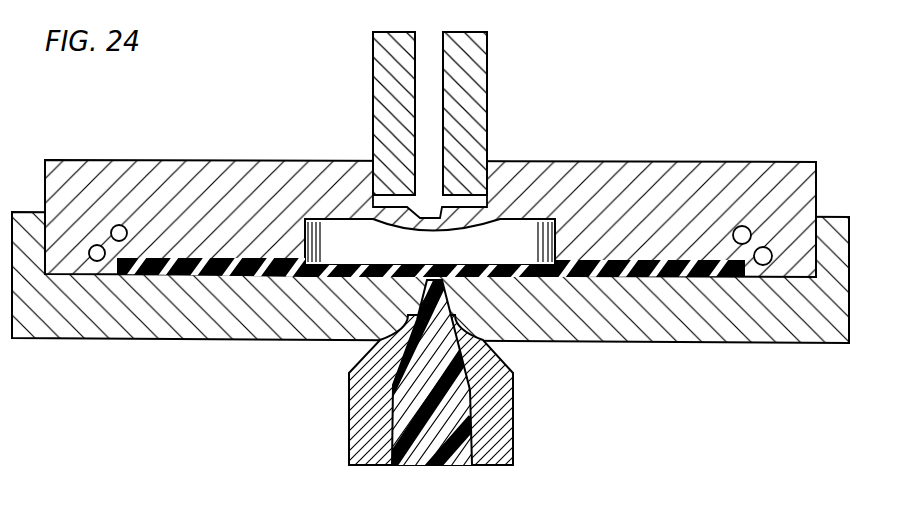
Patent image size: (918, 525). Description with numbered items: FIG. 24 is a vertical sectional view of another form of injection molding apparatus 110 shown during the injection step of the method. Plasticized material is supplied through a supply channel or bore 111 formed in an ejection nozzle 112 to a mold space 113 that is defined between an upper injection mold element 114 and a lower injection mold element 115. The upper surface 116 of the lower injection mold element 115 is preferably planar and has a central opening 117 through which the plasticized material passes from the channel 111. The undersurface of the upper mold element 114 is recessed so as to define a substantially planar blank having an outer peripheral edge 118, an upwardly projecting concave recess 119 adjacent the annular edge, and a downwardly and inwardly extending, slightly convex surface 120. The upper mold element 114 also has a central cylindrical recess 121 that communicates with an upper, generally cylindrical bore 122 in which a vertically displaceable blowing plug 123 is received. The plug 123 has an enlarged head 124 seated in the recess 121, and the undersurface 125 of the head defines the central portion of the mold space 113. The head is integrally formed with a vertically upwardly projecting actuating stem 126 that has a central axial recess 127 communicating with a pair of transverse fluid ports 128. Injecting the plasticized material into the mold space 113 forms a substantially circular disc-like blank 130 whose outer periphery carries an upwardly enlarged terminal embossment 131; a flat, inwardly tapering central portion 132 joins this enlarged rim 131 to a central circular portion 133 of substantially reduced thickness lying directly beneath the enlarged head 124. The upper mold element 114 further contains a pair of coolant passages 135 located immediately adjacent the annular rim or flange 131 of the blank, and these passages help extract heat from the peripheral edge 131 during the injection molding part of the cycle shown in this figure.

The valve assembly 110 is at (648, 158).
The supply channel or bore 111 is at (467, 430).
The ejection nozzle 112 is at (356, 401).
The mold space 113 is at (600, 280).
The upper injection mold element 114 is at (237, 172).
The lower injection mold element 115 is at (215, 338).
The upper surface 116 is at (72, 270).
The central opening 117 is at (430, 285).
The outer peripheral edge 118 is at (121, 262).
The upwardly projecting concave recess 119 is at (121, 250).
The slightly convex surface 120 is at (273, 264).
The central cylindrical recess 121 is at (342, 218).
The upper generally cylindrical bore 122 is at (487, 173).
The blowing plug 123 is at (494, 102).
The enlarged head 124 is at (508, 256).
The undersurface 125 is at (319, 263).
The actuating stem 126 is at (378, 97).
The central axial recess 127 is at (447, 73).
The transverse fluid ports 128 is at (492, 208).
The disc-like blank 130 is at (655, 262).
The terminal embossment 131 is at (740, 252).
The central portion 132 is at (652, 280).
The central circular portion 133 is at (525, 277).
The coolant passages 135 is at (766, 266).